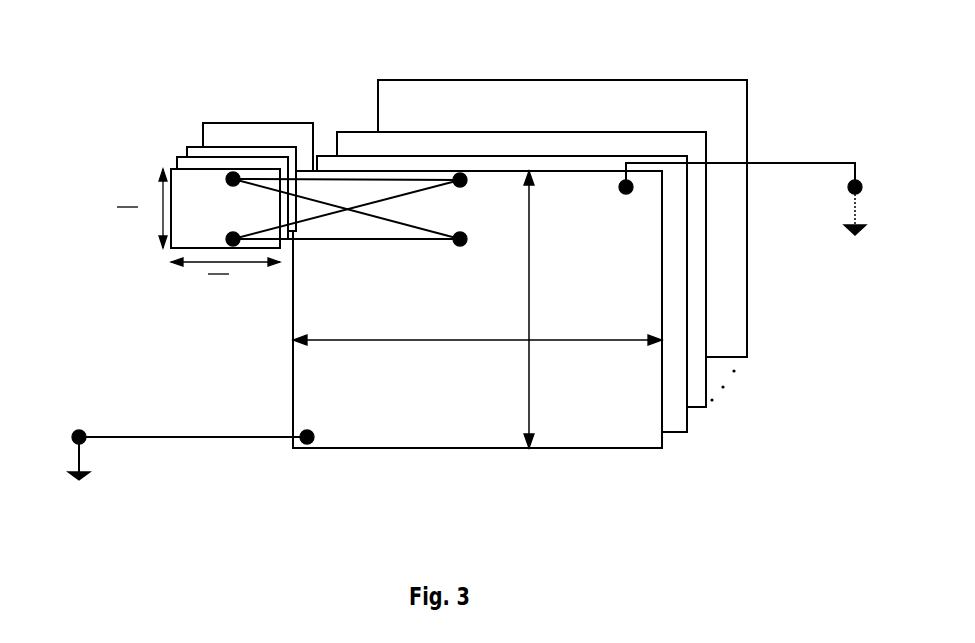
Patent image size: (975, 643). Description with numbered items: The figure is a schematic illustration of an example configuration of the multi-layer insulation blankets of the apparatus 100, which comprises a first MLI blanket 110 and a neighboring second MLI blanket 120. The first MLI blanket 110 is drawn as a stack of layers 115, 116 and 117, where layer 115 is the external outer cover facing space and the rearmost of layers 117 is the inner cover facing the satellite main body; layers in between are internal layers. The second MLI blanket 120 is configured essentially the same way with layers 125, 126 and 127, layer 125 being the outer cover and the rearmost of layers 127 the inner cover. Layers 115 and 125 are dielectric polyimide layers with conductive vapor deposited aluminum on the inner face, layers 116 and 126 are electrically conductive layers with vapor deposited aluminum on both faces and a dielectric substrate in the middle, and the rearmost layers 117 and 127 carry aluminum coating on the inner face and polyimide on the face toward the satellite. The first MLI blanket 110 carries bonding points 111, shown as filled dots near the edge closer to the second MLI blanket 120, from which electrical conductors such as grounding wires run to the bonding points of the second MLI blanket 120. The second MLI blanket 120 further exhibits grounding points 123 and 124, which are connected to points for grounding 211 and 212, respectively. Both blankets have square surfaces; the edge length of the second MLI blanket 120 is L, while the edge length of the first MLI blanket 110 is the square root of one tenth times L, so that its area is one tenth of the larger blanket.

The apparatus 100 is at (117, 18).
The first MLI blanket 110 is at (204, 205).
The bonding point 111 is at (233, 172).
The layer 115 is at (168, 194).
The layer 116 is at (176, 162).
The layer 117 is at (196, 147).
The second MLI blanket 120 is at (632, 448).
The grounding point 123 is at (293, 448).
The grounding point 124 is at (628, 190).
The layer 125 is at (665, 415).
The layer 126 is at (688, 382).
The layer 127 is at (703, 153).
The point for grounding 211 is at (79, 432).
The point for grounding 212 is at (860, 185).